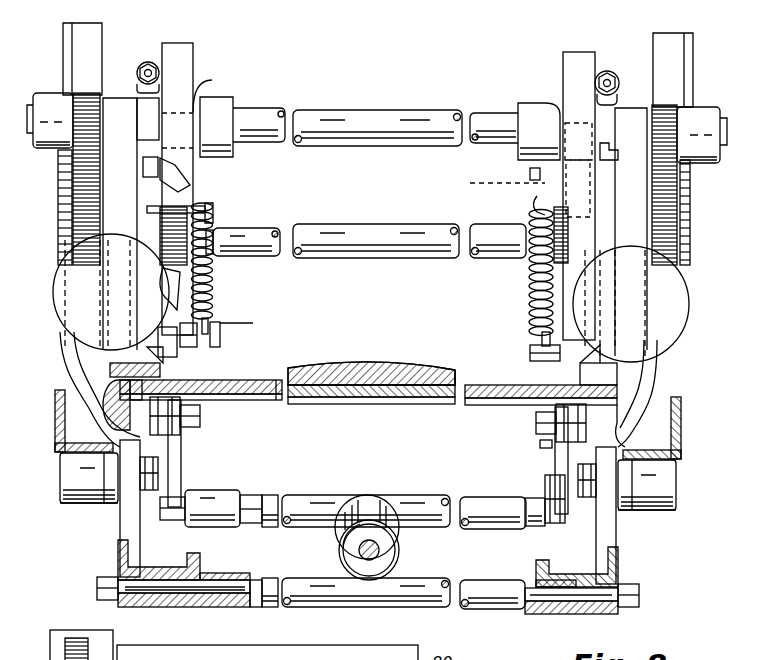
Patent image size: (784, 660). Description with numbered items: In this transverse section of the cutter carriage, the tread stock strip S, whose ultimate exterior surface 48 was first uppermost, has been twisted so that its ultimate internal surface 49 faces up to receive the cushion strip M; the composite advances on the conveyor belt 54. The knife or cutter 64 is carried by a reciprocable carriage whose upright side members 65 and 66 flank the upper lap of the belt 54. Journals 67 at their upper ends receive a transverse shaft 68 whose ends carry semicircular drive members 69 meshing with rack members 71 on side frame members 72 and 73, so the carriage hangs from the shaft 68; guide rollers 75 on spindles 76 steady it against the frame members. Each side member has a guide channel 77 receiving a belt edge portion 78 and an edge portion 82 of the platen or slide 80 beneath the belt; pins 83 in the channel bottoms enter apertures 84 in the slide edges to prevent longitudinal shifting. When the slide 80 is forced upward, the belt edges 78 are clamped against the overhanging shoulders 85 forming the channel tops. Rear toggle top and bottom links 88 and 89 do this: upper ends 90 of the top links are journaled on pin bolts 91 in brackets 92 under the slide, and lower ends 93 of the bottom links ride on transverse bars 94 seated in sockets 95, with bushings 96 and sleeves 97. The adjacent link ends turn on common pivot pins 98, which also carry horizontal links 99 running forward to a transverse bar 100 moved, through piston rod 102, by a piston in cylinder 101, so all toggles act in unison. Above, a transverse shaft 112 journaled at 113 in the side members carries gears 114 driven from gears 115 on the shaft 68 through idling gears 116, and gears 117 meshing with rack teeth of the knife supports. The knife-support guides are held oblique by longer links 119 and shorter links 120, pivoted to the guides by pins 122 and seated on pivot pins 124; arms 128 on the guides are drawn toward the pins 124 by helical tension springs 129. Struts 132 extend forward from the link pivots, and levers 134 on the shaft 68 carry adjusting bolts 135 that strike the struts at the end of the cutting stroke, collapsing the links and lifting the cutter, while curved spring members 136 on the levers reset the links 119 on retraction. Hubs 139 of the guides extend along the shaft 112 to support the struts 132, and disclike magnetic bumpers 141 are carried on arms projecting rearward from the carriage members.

The ultimate exterior surface 48 is at (350, 384).
The ultimate internal surface 49 is at (452, 373).
The conveyor belt 54 is at (268, 402).
The knife or cutter 64 is at (238, 343).
The carriage side member 65 is at (118, 530).
The carriage side member 66 is at (609, 560).
The journal 67 is at (117, 96).
The transverse shaft 68 is at (337, 113).
The semicircular rack member 69 is at (65, 52).
The rack member 71 is at (58, 456).
The side frame member 72 is at (55, 443).
The side frame member 73 is at (679, 457).
The rear guide roller 75 is at (80, 505).
The spindle 76 is at (58, 490).
The guide recess or channel 77 is at (157, 383).
The marginal edge portion of belt 78 is at (118, 377).
The platen or slide 80 is at (399, 400).
The marginal edge portion of slide 82 is at (632, 412).
The pin 83 is at (160, 447).
The aperture 84 is at (128, 402).
The overhanging shoulder 85 is at (163, 365).
The top toggle link 88 is at (175, 463).
The bottom toggle link 89 is at (197, 556).
The upper end of top link 90 is at (200, 410).
The pin bolt 91 is at (202, 425).
The bracket or ear 92 is at (547, 445).
The lower end of bottom link 93 is at (197, 607).
The transverse bar 94 is at (250, 606).
The socket 95 is at (123, 607).
The bushing 96 is at (172, 607).
The sleeve 97 is at (242, 578).
The common pivot pin 98 is at (272, 494).
The horizontal link 99 is at (228, 492).
The transverse bar 100 is at (329, 503).
The cylinder 101 is at (342, 555).
The piston rod 102 is at (380, 554).
The transverse shaft 112 is at (258, 227).
The journal 113 is at (103, 212).
The gear 114 is at (90, 243).
The gear 115 is at (80, 90).
The intermediate idling gear 116 is at (72, 176).
The gear 117 is at (180, 208).
The long link 119 is at (594, 310).
The short link 120 is at (507, 181).
The pin 122 is at (530, 173).
The pivot pin 124 is at (240, 322).
The arm 128 is at (537, 203).
The helical tension spring 129 is at (214, 276).
The strut 132 is at (616, 156).
The lever 134 is at (132, 66).
The adjusting bolt 135 is at (152, 64).
The curved spring member 136 is at (564, 74).
The hub 139 is at (150, 213).
The bumper 141 is at (58, 318).
The cushion strip M is at (387, 367).
The tread stock strip S is at (272, 378).